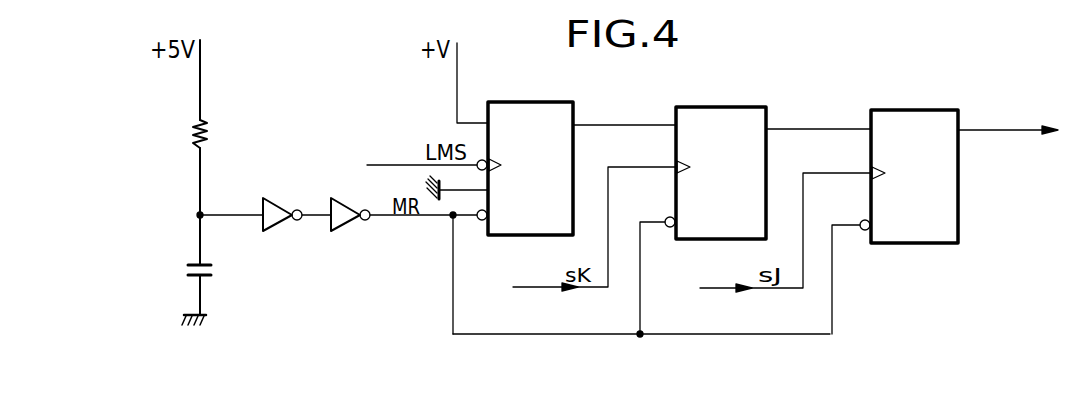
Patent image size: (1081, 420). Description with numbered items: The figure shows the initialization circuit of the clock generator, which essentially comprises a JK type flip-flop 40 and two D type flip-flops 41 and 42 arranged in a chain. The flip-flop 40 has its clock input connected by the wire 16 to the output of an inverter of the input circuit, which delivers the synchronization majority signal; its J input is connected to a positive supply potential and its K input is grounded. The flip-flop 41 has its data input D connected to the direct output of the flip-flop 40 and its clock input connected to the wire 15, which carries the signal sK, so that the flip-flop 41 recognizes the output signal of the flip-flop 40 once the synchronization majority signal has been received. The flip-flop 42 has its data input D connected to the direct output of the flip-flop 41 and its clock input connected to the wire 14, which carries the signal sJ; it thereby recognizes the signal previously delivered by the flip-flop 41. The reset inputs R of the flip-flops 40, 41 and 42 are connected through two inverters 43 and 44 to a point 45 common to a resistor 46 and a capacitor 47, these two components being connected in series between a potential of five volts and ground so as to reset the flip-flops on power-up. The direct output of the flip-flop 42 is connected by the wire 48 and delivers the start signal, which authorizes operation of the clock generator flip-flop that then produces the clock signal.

The wire 14 is at (713, 291).
The wire 15 is at (529, 290).
The wire 16 is at (400, 166).
The JK type flip-flop 40 is at (536, 118).
The D type flip-flop 41 is at (726, 122).
The D type flip-flop 42 is at (921, 125).
The inverter 43 is at (281, 180).
The inverter 44 is at (348, 180).
The point 45 is at (201, 213).
The resistor 46 is at (206, 147).
The capacitor 47 is at (218, 246).
The wire 48 is at (1010, 134).